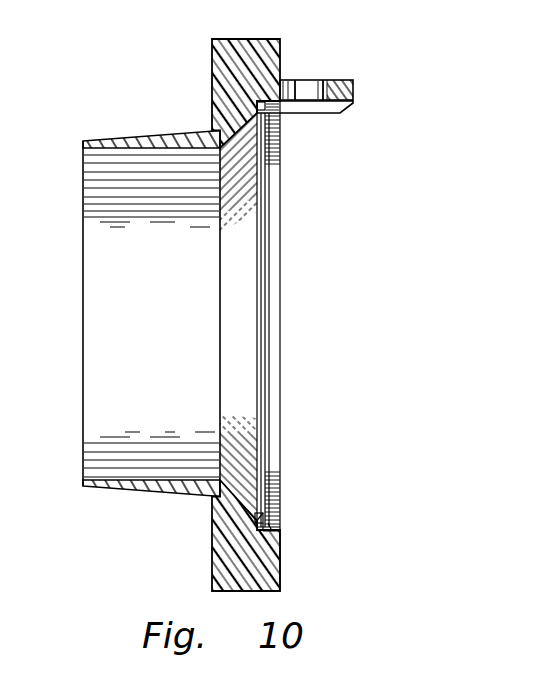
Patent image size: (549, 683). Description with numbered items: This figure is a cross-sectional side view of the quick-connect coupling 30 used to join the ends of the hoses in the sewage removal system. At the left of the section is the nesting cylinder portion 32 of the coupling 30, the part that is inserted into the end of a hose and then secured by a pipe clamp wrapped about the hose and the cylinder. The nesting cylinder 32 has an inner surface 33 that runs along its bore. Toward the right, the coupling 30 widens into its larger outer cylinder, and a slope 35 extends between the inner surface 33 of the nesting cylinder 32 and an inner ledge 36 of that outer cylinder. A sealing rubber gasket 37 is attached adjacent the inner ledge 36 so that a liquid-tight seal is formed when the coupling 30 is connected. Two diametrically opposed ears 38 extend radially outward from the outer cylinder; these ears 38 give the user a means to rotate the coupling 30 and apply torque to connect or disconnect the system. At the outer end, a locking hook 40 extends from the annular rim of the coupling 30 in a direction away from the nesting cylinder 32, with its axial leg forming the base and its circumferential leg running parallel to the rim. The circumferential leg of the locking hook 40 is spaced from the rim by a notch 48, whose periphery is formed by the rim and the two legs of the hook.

The quick-connect coupling 30 is at (86, 106).
The nesting cylinder portion 32 is at (142, 134).
The inner surface 33 is at (100, 313).
The slope 35 is at (229, 149).
The inner ledge 36 is at (282, 518).
The sealing rubber gasket 37 is at (270, 112).
The ears 38 is at (258, 40).
The locking hook 40 is at (355, 92).
The notch 48 is at (297, 86).